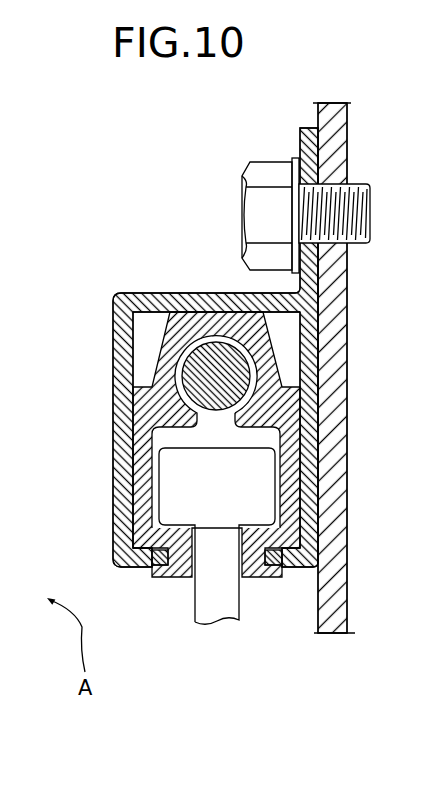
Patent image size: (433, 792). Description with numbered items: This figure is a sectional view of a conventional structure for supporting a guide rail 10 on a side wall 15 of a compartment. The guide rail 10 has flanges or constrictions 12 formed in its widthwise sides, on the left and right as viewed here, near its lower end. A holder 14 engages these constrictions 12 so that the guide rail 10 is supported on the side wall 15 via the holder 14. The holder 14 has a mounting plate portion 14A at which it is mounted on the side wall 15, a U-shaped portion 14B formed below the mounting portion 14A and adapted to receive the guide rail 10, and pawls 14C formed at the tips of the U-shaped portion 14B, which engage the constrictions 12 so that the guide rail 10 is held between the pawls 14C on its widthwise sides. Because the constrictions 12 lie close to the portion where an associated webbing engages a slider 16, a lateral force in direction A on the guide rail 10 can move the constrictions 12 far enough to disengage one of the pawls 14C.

The guide rail 10 is at (140, 418).
The constrictions 12 is at (147, 565).
The holder 14 is at (165, 369).
The mounting plate portion 14A is at (303, 142).
The U-shaped portion 14B is at (163, 295).
The pawls 14C is at (146, 572).
The side wall 15 is at (320, 622).
The slider 16 is at (204, 608).